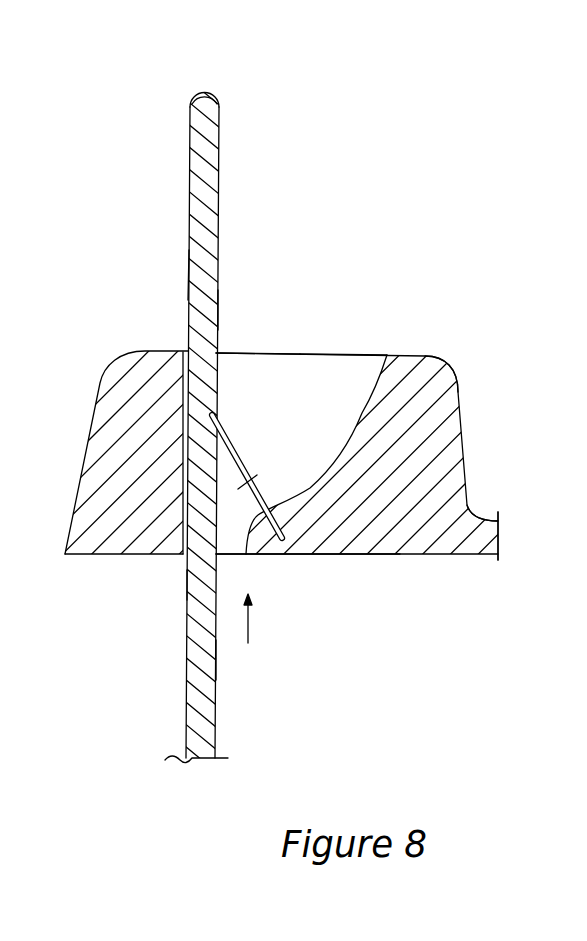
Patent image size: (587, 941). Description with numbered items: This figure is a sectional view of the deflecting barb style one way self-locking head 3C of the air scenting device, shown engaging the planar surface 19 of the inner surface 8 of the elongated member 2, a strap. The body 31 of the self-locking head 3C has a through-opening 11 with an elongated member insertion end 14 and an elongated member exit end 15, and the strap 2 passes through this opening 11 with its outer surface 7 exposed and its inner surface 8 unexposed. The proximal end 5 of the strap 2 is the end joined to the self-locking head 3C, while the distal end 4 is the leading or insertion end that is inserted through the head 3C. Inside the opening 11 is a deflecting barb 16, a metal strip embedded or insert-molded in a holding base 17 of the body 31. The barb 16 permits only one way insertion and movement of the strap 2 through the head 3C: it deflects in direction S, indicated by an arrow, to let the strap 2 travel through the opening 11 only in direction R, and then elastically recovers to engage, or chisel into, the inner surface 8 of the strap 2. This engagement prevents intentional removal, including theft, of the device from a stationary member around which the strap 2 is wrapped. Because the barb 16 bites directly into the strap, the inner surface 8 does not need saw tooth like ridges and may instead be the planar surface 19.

The elongated member 2 is at (190, 583).
The distal end of elongated member 4 is at (203, 105).
The proximal end of elongated member 5 is at (470, 542).
The outer surface of elongated member 7 is at (188, 270).
The inner surface of elongated member 8 is at (217, 222).
The through-opening 11 is at (347, 363).
The elongated member insertion end of through-opening 14 is at (227, 545).
The elongated member exit end of through-opening 15 is at (247, 363).
The deflecting barb 16 is at (240, 460).
The holding base 17 is at (313, 544).
The planar surface 19 is at (215, 312).
The body of one way self-locking head 31 is at (113, 395).
The one way self-locking head 3C is at (430, 390).
The deflection direction S is at (258, 473).
The insertion direction R is at (256, 618).